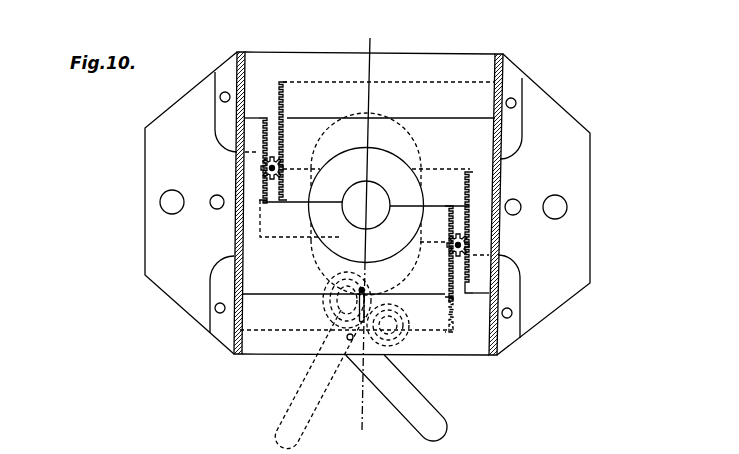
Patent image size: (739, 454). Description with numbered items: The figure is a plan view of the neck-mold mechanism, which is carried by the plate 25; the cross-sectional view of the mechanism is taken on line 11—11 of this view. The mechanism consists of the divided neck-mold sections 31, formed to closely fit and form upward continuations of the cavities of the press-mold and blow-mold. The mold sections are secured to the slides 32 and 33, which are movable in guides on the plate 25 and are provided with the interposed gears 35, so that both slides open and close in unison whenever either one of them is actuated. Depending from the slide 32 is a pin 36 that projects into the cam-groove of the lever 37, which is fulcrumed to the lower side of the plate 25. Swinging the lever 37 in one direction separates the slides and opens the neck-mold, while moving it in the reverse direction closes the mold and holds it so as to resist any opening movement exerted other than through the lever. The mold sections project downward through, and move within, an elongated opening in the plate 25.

The section line 11- 11 is at (367, 236).
The plate 25 is at (367, 203).
The neck-mold sections 31 is at (366, 204).
The slide 32 is at (346, 224).
The slide 33 is at (387, 207).
The interposed gears 35 is at (263, 168).
The pin 36 is at (364, 287).
The lever 37 is at (446, 427).